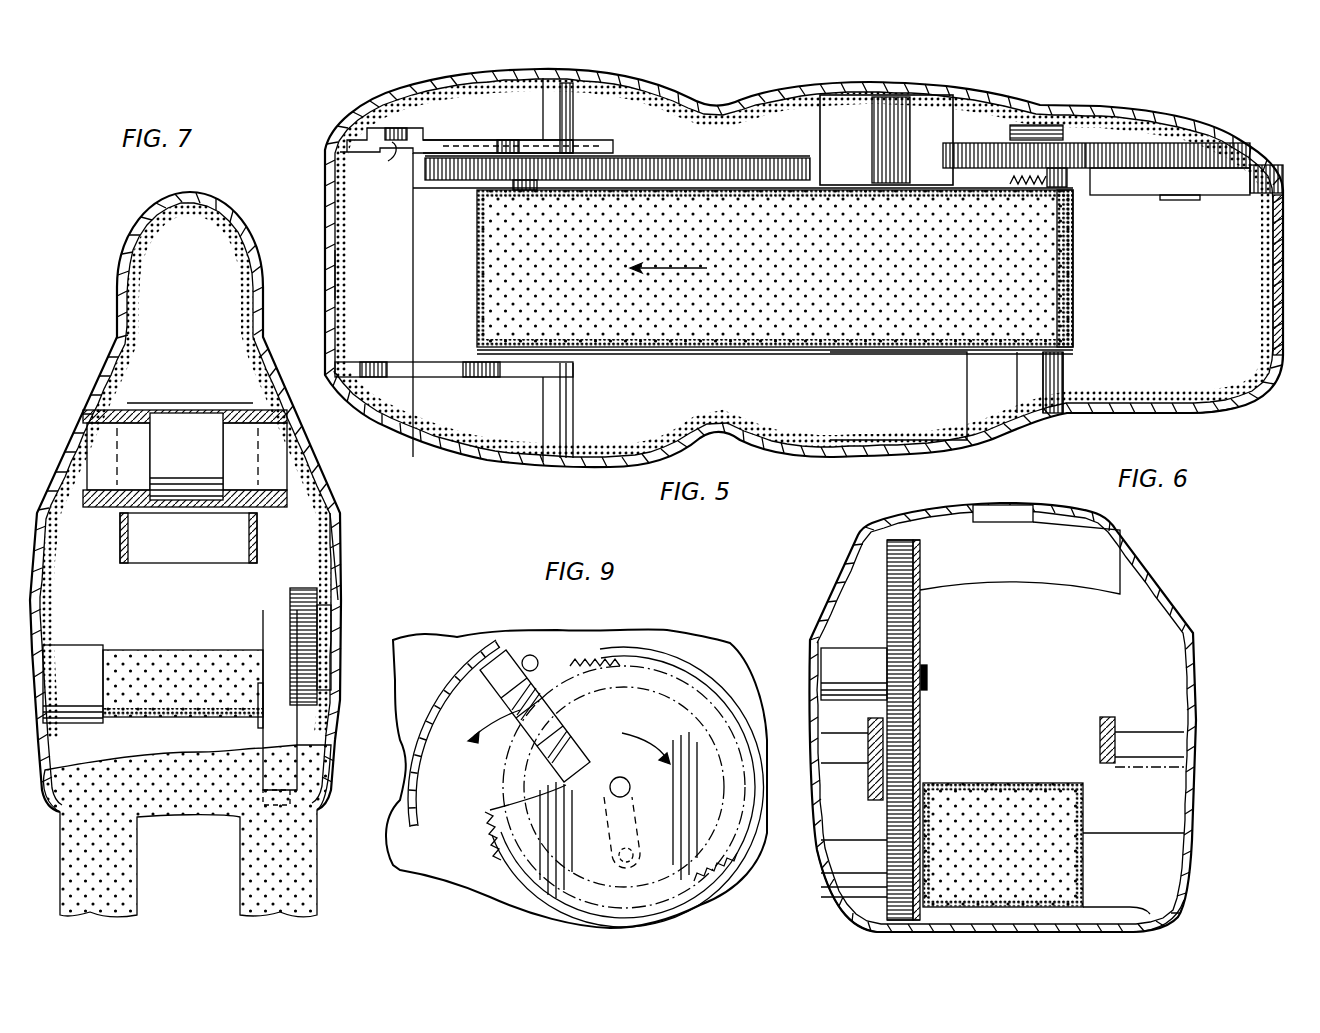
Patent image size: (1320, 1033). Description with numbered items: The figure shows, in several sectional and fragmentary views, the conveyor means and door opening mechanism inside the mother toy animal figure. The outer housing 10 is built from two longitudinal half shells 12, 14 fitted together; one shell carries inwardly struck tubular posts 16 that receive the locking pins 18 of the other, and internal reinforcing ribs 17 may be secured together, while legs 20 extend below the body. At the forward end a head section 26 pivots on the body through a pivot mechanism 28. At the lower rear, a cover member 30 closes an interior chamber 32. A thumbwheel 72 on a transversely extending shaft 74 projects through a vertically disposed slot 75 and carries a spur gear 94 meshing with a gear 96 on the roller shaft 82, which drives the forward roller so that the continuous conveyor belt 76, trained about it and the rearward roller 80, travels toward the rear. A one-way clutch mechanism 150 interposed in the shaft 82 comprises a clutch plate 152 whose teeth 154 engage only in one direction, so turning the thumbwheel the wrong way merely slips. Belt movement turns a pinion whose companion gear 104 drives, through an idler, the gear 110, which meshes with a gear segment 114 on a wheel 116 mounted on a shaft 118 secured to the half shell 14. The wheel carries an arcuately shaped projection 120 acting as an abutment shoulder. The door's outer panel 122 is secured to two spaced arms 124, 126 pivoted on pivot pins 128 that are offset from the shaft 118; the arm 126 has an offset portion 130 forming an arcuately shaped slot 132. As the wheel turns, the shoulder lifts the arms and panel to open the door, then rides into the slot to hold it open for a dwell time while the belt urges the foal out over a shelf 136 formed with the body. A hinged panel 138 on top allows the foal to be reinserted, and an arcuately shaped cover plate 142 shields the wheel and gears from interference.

In FIG. 5, the outer housing 10 is at (1246, 405).
In FIG. 6, the outer housing 10 is at (1201, 600).
In FIG. 5, the half shell 12 is at (1200, 411).
In FIG. 6, the half shell 12 is at (1170, 919).
In FIG. 5, the half shell 14 is at (1278, 242).
In FIG. 7, the half shell 14 is at (333, 566).
In FIG. 6, the half shell 14 is at (850, 927).
In FIG. 7, the tubular posts 16 is at (93, 647).
In FIG. 7, the internal reinforcing ribs 17 is at (96, 556).
In FIG. 7, the locking pins 18 is at (165, 650).
In FIG. 7, the legs 20 is at (248, 879).
In FIG. 7, the head section 26 is at (143, 224).
In FIG. 7, the pivot mechanism 28 is at (185, 424).
In FIG. 5, the cover member 30 is at (327, 235).
In FIG. 5, the interior chamber 32 is at (803, 420).
In FIG. 7, the interior chamber 32 is at (299, 564).
In FIG. 5, the thumbwheel 72 is at (1280, 168).
In FIG. 7, the thumbwheel 72 is at (285, 762).
In FIG. 5, the transversely extending shaft 74 is at (1180, 142).
In FIG. 5, the vertically disposed slot 75 is at (1280, 202).
In FIG. 5, the continuous conveyor belt 76 is at (1075, 293).
In FIG. 6, the continuous conveyor belt 76 is at (992, 787).
In FIG. 5, the roller 80 is at (525, 187).
In FIG. 5, the roller shaft 82 is at (1035, 118).
In FIG. 5, the spur gear 94 is at (1218, 145).
In FIG. 7, the spur gear 94 is at (320, 627).
In FIG. 5, the gear 96 is at (1085, 148).
In FIG. 6, the gear 104 is at (906, 928).
In FIG. 5, the gear 110 is at (766, 156).
In FIG. 9, the gear segment 114 is at (725, 880).
In FIG. 5, the wheel 116 is at (668, 156).
In FIG. 9, the wheel 116 is at (683, 698).
In FIG. 6, the wheel 116 is at (916, 625).
In FIG. 9, the transversely extended shaft 118 is at (631, 772).
In FIG. 6, the transversely extended shaft 118 is at (929, 686).
In FIG. 5, the arcuately shaped projection 120 is at (597, 145).
In FIG. 9, the arcuately shaped projection 120 is at (515, 790).
In FIG. 6, the arcuately shaped projection 120 is at (870, 801).
In FIG. 5, the outer panel 122 is at (335, 280).
In FIG. 9, the outer panel 122 is at (473, 677).
In FIG. 5, the arm 124 is at (475, 375).
In FIG. 5, the arm 126 is at (443, 140).
In FIG. 9, the arm 126 is at (536, 658).
In FIG. 5, the pivot pins 128 is at (548, 100).
In FIG. 5, the offset portion 130 is at (385, 128).
In FIG. 5, the arcuately shaped slot 132 is at (392, 142).
In FIG. 9, the arcuately shaped slot 132 is at (515, 733).
In FIG. 5, the shelf 136 is at (390, 384).
In FIG. 6, the panel 138 is at (1043, 508).
In FIG. 6, the arcuately shaped cover plate 142 is at (920, 554).
In FIG. 5, the clutch mechanism 150 is at (1002, 191).
In FIG. 5, the clutch plate 152 is at (1055, 187).
In FIG. 5, the teeth 154 is at (1033, 188).